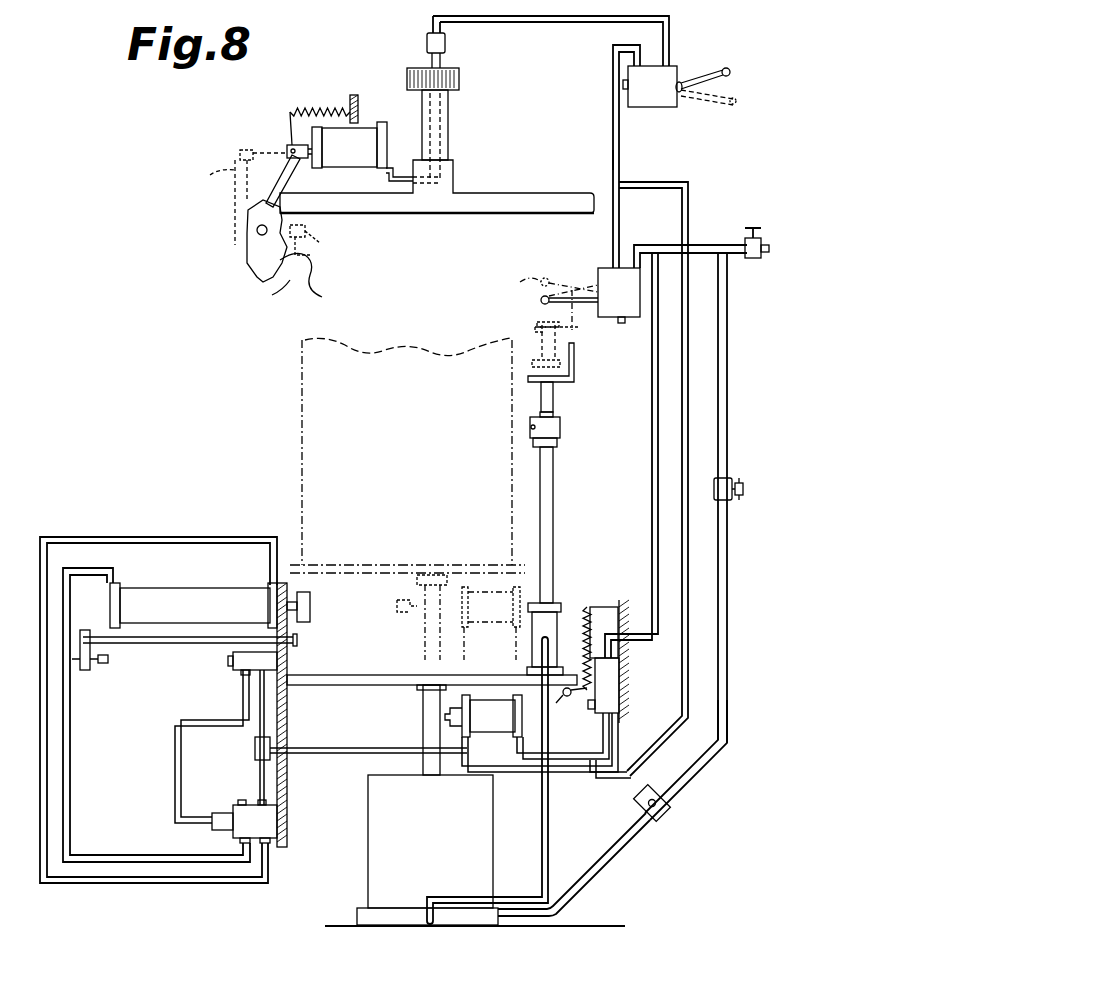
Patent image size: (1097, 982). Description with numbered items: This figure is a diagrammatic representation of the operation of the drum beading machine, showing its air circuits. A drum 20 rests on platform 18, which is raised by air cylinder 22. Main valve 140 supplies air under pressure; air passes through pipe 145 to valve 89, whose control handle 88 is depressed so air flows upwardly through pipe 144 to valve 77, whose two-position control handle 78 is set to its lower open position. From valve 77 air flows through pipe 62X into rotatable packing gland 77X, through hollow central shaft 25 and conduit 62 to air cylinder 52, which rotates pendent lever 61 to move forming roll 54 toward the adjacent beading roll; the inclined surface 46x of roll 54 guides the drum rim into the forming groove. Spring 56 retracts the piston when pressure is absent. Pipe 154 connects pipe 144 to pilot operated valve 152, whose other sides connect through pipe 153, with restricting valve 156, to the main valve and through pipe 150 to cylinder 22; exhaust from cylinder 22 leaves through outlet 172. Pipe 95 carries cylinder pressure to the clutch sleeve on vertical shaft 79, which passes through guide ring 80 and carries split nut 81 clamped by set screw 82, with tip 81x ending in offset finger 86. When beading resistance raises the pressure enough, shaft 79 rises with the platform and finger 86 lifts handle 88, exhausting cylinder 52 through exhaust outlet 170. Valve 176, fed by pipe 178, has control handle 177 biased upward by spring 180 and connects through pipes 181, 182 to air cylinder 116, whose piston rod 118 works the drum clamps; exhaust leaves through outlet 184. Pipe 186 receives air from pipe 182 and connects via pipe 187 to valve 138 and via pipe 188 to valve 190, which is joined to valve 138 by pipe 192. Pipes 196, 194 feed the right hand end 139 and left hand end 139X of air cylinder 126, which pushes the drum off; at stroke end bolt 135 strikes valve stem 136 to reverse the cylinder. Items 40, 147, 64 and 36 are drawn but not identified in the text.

The rotatable packing gland 77X is at (445, 42).
The pipe 62X is at (540, 18).
The central shaft 25 is at (448, 127).
The bar 40 is at (516, 192).
The conduit 62 is at (398, 165).
The pipe 147 is at (627, 85).
The valve 77 is at (652, 86).
The control handle 78 is at (735, 71).
The pipe 144 is at (619, 158).
The pipe 154 is at (690, 213).
The pipe 145 is at (655, 236).
The main valve 140 is at (757, 228).
The pipe 178 is at (652, 540).
The pipe 153 is at (727, 385).
The restricting valve 156 is at (743, 489).
The outlet 172 is at (690, 780).
The pilot operated valve 152 is at (670, 806).
The pipe 150 is at (596, 880).
The valve 89 is at (619, 292).
The exhaust outlet 170 is at (622, 323).
The control handle 88 is at (541, 300).
The offset finger 86 is at (574, 368).
The tip 81x is at (553, 400).
The split nut 81 is at (560, 430).
The set screw 82 is at (531, 428).
The guide ring 80 is at (557, 445).
The vertical shaft 79 is at (553, 497).
The drum 20 is at (305, 432).
The platform 18 is at (406, 564).
The piston rod 118 is at (440, 572).
The air cylinder 116 is at (486, 565).
The spring 180 is at (586, 606).
The valve 176 is at (620, 677).
The control handle 177 is at (569, 698).
The outlet 184 is at (598, 718).
The pipe 182 is at (517, 774).
The pipe 181 is at (587, 762).
The pipe 95 is at (549, 827).
The air cylinder 22 is at (475, 805).
The pipe 186 is at (340, 755).
The pipe 194 is at (148, 880).
The pipe 196 is at (126, 852).
The air cylinder 126 is at (215, 715).
The right hand end 139 is at (118, 590).
The left hand end 139X is at (268, 595).
The bolt 135 is at (110, 665).
The valve stem 136 is at (228, 663).
The valve 138 is at (246, 667).
The pipe 192 is at (178, 756).
The pipe 188 is at (259, 786).
The pipe 187 is at (264, 724).
The valve 190 is at (244, 819).
The spring 56 is at (330, 103).
The air cylinder 52 is at (337, 145).
The pendent lever 61 is at (250, 190).
The plate 64 is at (265, 280).
The inclined surface 46x is at (268, 285).
The bracket 36 is at (320, 243).
The forming roll 54 is at (322, 297).